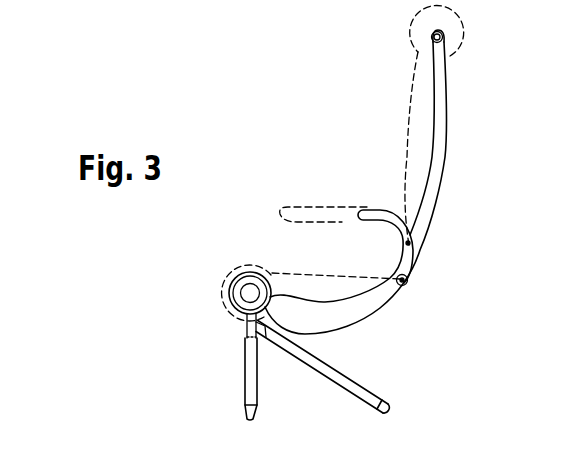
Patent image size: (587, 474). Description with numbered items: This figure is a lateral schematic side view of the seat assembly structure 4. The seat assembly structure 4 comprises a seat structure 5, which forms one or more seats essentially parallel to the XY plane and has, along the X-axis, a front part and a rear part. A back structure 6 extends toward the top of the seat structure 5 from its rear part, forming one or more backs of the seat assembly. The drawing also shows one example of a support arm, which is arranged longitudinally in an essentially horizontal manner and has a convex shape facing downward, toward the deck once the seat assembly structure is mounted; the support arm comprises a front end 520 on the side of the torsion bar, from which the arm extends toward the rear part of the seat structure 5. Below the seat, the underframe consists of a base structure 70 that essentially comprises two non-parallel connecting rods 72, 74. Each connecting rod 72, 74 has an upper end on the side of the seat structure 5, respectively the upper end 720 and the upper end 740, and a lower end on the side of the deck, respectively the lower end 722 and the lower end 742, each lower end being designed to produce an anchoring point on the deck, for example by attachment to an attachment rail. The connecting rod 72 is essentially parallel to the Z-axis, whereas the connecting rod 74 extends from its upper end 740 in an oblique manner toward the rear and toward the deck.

The seat assembly structure 4 is at (278, 142).
The back structure 6 is at (447, 135).
The seat structure 5 is at (375, 314).
The front end 520 is at (233, 277).
The upper end 740 is at (260, 333).
The upper end 720 is at (243, 322).
The base structure 70 is at (198, 376).
The connecting rod 72 is at (244, 385).
The lower end 722 is at (258, 413).
The connecting rod 74 is at (347, 375).
The lower end 742 is at (388, 410).